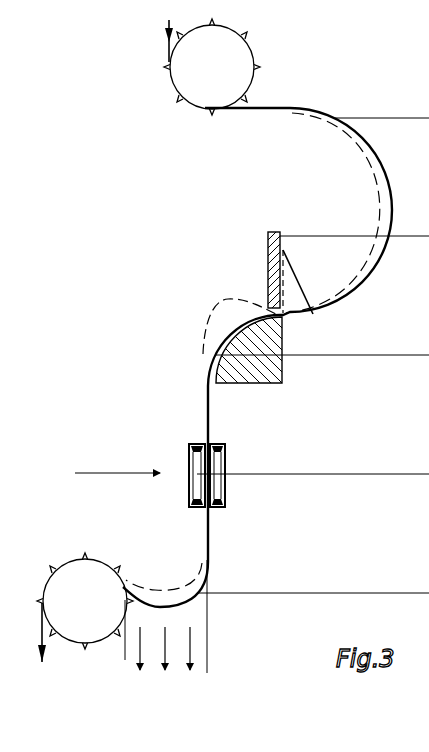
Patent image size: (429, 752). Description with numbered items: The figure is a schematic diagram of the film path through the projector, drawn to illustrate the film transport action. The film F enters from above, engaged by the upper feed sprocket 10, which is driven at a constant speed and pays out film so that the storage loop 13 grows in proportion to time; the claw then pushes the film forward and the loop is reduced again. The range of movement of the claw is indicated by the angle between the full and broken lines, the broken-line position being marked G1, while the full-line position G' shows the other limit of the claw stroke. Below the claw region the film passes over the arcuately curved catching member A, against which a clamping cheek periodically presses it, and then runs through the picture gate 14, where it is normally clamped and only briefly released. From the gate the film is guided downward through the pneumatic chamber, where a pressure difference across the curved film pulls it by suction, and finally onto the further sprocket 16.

The feed sprocket 10 is at (245, 53).
The storage loop 13 is at (202, 318).
The picture gate 14 is at (225, 462).
The further sprocket 16 is at (75, 572).
The film F is at (283, 108).
The guide block A is at (282, 382).
The claw position (broken line) G1 is at (283, 270).
The gap angle line G' is at (304, 282).